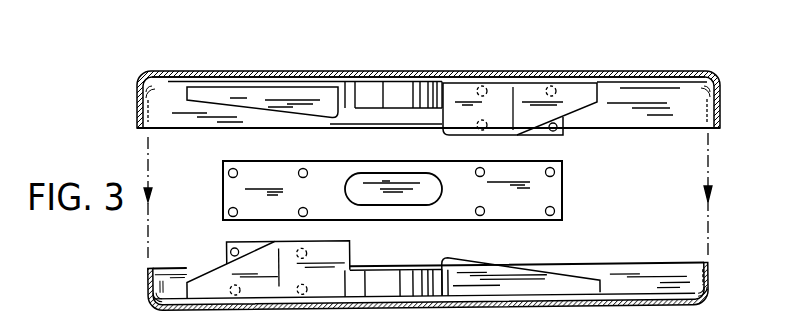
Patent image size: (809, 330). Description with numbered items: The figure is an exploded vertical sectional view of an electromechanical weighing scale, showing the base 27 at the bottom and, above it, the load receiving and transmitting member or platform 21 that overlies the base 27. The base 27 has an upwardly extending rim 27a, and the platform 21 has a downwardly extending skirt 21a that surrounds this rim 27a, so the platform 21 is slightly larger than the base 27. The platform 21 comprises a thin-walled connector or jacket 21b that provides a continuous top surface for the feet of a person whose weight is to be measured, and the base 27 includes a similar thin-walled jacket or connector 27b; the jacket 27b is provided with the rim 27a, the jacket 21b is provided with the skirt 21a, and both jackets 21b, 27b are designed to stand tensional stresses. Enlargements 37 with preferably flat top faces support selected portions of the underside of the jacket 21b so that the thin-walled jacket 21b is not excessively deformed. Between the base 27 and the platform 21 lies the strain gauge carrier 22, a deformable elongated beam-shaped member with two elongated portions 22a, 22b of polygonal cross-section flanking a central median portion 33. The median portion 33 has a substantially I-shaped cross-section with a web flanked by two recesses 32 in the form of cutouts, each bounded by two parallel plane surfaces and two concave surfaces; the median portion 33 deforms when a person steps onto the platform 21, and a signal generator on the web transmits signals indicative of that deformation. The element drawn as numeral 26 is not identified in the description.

The load receiving and transmitting member (platform) 21 is at (392, 73).
The skirt 21a is at (136, 103).
The jacket 21b is at (368, 60).
The carrier 22 is at (424, 131).
The elongated portion 22a is at (330, 177).
The elongated portion 22b is at (482, 163).
The wedge member 26 is at (278, 178).
The base 27 is at (413, 269).
The rim 27a is at (148, 280).
The jacket 27b is at (667, 310).
The recess 32 is at (408, 190).
The median portion 33 is at (409, 211).
The enlargement 37 is at (391, 90).